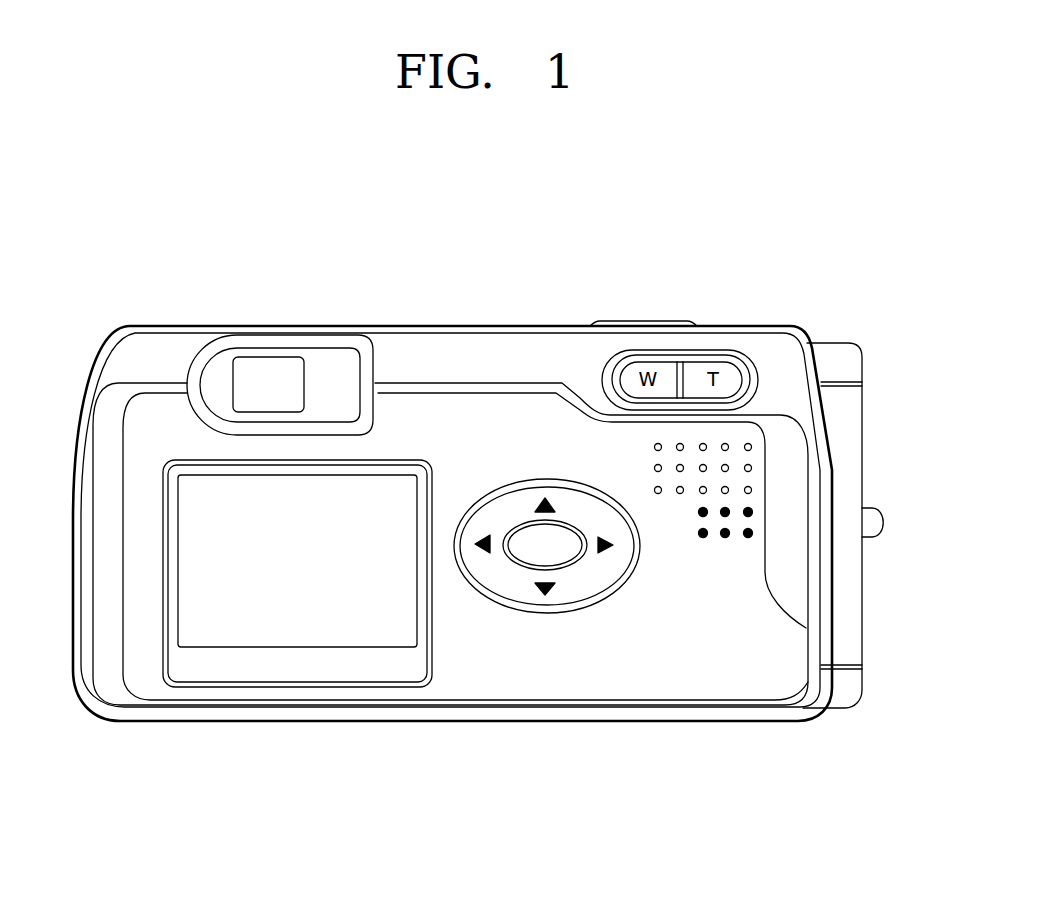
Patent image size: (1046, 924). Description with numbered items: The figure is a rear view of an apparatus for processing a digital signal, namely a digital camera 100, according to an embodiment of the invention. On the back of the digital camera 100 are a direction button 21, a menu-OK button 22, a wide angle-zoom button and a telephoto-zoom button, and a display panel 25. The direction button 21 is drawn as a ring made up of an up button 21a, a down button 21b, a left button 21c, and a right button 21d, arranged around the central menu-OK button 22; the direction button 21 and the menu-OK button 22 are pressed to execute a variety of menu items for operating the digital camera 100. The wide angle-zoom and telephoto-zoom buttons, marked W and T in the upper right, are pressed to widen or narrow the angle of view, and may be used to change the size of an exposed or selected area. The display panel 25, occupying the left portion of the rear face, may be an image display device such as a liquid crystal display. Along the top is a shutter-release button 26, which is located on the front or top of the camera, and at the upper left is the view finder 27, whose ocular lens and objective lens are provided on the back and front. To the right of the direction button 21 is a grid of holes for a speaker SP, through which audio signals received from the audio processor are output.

The digital camera 100 is at (858, 270).
The view finder 27 is at (272, 368).
The shutter-release button 26 is at (646, 321).
The display panel 25 is at (292, 627).
The direction button 21 is at (573, 602).
The up button 21a is at (547, 498).
The down button 21b is at (548, 594).
The left button 21c is at (483, 543).
The right button 21d is at (612, 545).
The menu-OK button 22 is at (574, 558).
The speaker SP is at (752, 512).